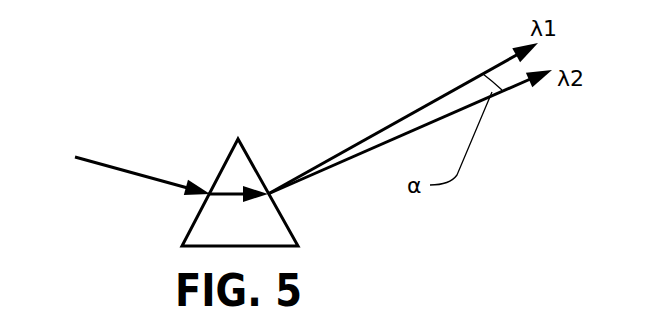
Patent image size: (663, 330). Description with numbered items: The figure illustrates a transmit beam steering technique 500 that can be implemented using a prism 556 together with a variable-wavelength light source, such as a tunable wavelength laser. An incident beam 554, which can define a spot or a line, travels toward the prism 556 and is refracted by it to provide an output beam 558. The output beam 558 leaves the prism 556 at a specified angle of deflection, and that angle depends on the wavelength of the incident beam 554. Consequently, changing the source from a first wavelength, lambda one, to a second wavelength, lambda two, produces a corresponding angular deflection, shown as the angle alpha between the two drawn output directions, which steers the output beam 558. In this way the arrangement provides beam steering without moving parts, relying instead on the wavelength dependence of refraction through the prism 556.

The transmit beam steering technique 500 is at (306, 64).
The incident beam 554 is at (110, 167).
The prism 556 is at (223, 163).
The output beam 558 is at (320, 163).